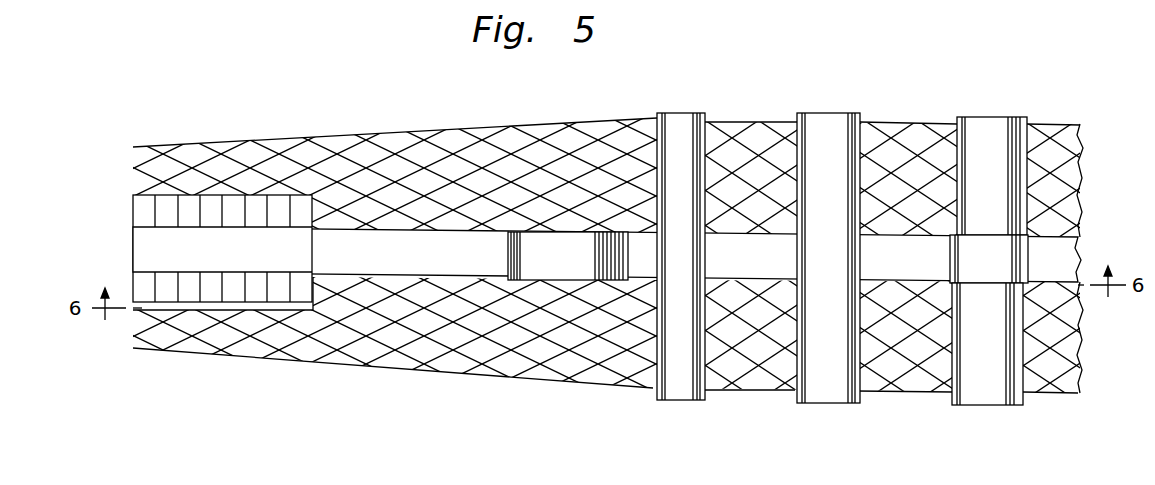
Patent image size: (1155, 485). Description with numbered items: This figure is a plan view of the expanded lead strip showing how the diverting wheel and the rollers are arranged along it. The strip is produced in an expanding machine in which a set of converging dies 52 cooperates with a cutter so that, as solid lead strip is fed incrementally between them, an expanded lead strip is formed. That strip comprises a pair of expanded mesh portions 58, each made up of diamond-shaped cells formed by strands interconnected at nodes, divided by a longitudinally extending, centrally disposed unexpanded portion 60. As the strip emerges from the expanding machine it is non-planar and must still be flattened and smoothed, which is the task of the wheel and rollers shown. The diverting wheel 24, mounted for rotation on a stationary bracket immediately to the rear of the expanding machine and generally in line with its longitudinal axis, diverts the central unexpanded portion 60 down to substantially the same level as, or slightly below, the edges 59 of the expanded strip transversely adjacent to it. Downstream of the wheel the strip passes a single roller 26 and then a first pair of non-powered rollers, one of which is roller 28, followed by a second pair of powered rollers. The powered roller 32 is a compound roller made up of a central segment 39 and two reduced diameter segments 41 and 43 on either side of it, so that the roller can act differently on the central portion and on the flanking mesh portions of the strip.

The diverting wheel 24 is at (557, 273).
The single roller 26 is at (675, 120).
The non-powered roller 28 is at (828, 125).
The powered roller 32 is at (978, 112).
The central segment 39 is at (1003, 253).
The reduced diameter segment 41 is at (997, 353).
The reduced diameter segment 43 is at (1000, 165).
The converging dies 52 is at (145, 215).
The expanded mesh portion 58 is at (428, 180).
The edge 59 is at (563, 123).
The unexpanded portion 60 is at (350, 240).